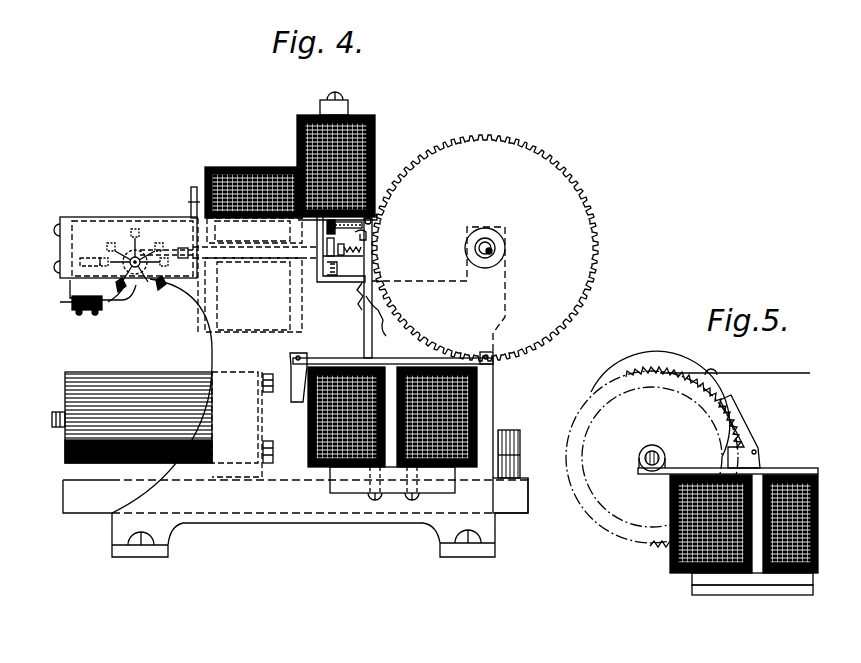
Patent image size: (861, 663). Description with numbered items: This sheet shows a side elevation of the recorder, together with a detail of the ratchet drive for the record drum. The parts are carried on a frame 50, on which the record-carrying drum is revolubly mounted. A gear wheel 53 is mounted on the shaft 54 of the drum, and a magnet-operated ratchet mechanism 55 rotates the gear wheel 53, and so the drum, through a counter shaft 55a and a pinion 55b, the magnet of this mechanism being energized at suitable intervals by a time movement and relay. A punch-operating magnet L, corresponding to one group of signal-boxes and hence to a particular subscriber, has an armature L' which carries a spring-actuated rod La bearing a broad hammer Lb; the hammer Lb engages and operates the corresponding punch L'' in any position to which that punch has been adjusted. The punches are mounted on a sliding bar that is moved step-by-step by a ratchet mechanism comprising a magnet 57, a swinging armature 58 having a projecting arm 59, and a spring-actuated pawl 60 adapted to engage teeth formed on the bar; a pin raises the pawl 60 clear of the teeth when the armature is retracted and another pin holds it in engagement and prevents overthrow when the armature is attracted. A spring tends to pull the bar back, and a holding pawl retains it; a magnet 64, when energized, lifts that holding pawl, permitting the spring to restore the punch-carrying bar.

In FIG. 4, the frame 50 is at (113, 217).
In FIG. 4, the punch-operating magnet L is at (253, 180).
In FIG. 4, the armature L' is at (178, 190).
In FIG. 4, the spring-actuated rod La is at (248, 256).
In FIG. 4, the hammer Lb is at (317, 258).
In FIG. 4, the punch L'' is at (379, 225).
In FIG. 4, the magnet 64 is at (373, 140).
In FIG. 4, the spring-actuated pawl 60 is at (372, 222).
In FIG. 4, the projecting arm 59 is at (373, 277).
In FIG. 4, the counter shaft 55a is at (374, 330).
In FIG. 5, the counter shaft 55a is at (655, 452).
In FIG. 4, the pinion 55b is at (360, 299).
In FIG. 4, the gear wheel 53 is at (571, 319).
In FIG. 5, the gear wheel 53 is at (653, 449).
In FIG. 4, the shaft 54 is at (496, 250).
In FIG. 4, the swinging armature 58 is at (328, 359).
In FIG. 4, the magnet 57 is at (318, 423).
In FIG. 5, the magnet-operated ratchet mechanism 55 is at (778, 470).